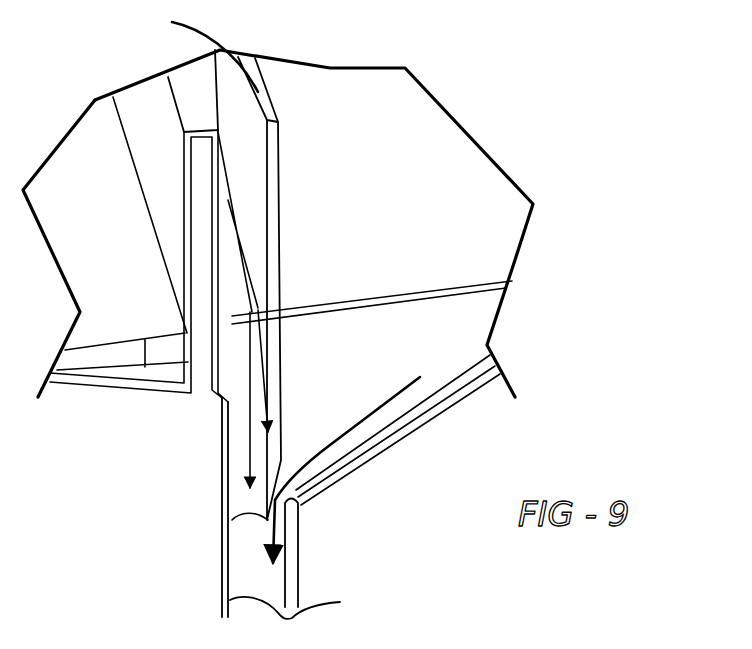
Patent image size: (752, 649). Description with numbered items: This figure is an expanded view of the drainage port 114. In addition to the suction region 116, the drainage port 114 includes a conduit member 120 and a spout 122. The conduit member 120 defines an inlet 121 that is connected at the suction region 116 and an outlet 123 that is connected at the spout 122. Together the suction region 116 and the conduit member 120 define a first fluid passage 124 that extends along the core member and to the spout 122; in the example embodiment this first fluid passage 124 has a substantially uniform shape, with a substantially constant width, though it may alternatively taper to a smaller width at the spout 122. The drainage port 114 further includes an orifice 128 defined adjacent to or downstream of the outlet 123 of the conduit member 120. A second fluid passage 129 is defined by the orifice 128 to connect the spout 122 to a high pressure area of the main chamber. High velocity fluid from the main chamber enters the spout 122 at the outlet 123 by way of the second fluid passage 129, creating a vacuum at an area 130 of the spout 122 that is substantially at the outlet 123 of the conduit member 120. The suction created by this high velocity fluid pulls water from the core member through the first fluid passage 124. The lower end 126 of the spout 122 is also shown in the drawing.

The drainage port 114 is at (180, 403).
The suction region 116 is at (193, 107).
The conduit member 120 is at (287, 365).
The inlet 121 is at (236, 322).
The spout 122 is at (220, 582).
The outlet 123 is at (253, 517).
The first fluid passage 124 is at (235, 277).
The lower end 126 is at (340, 602).
The orifice 128 is at (297, 498).
The second fluid passage 129 is at (385, 423).
The area 130 is at (250, 542).